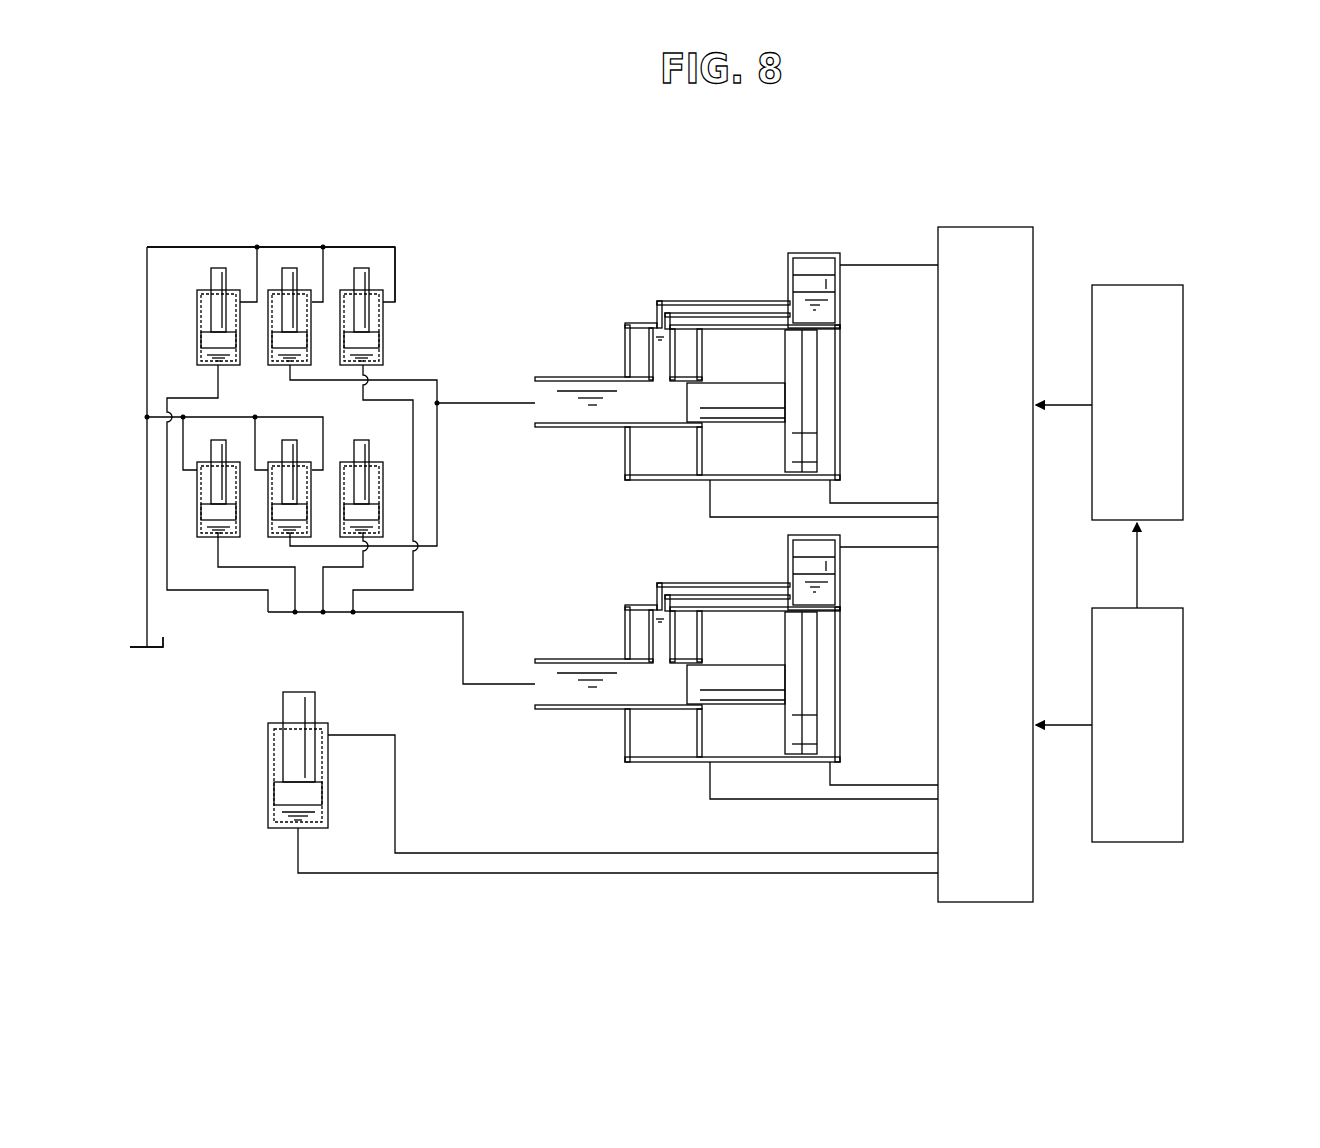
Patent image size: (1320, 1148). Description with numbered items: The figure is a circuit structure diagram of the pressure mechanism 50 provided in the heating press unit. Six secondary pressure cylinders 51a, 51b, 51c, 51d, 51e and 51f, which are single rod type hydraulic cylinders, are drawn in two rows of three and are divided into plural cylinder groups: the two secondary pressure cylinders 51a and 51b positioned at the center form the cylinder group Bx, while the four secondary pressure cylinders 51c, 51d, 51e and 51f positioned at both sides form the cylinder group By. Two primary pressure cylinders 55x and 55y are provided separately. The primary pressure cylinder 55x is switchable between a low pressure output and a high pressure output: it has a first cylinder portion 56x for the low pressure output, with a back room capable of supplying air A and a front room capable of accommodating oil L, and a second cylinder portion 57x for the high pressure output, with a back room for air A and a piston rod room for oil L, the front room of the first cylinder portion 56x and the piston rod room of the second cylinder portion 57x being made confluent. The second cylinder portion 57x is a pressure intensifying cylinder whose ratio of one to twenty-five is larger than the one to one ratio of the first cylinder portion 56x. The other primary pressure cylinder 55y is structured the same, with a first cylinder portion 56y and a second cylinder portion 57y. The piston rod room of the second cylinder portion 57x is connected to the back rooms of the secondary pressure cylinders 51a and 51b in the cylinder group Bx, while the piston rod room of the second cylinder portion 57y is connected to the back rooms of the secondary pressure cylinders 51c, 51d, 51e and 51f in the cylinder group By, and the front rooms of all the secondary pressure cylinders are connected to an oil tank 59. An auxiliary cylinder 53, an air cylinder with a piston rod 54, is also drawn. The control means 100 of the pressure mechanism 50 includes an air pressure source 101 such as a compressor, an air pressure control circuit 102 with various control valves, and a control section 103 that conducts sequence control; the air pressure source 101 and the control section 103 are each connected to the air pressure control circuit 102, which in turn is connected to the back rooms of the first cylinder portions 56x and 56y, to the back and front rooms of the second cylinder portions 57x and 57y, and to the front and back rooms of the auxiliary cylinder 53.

The pressure mechanism 50 is at (1078, 196).
The control means 100 is at (1078, 255).
The air pressure source 101 is at (1184, 430).
The air pressure control circuit 102 is at (1034, 596).
The control section 103 is at (1184, 703).
The secondary pressure cylinder 51a is at (268, 345).
The secondary pressure cylinder 51b is at (268, 515).
The secondary pressure cylinder 51c is at (386, 320).
The secondary pressure cylinder 51d is at (383, 470).
The secondary pressure cylinder 51e is at (197, 318).
The secondary pressure cylinder 51f is at (198, 520).
The auxiliary cylinder 53 is at (268, 770).
The piston rod 54 is at (318, 702).
The primary pressure cylinder 55x is at (710, 348).
The primary pressure cylinder 55y is at (724, 638).
The first cylinder portion 56x is at (788, 262).
The first cylinder portion 56y is at (840, 593).
The second cylinder portion 57x is at (841, 437).
The second cylinder portion 57y is at (841, 718).
The oil tank 59 is at (166, 641).
The cylinder group Bx is at (296, 220).
The cylinder group By is at (408, 257).
The air A is at (820, 265).
The oil L is at (372, 358).